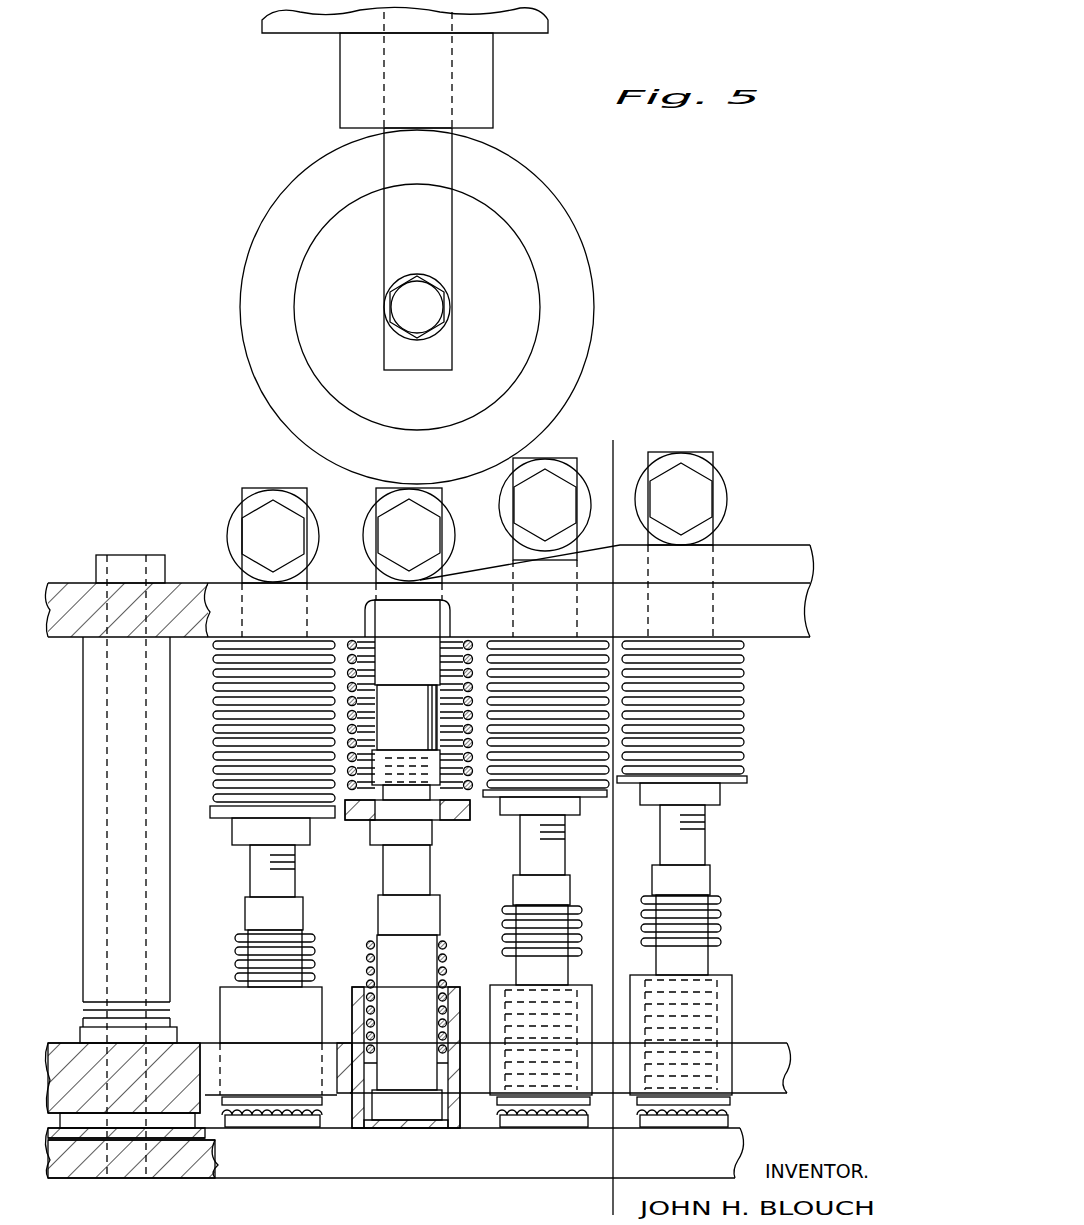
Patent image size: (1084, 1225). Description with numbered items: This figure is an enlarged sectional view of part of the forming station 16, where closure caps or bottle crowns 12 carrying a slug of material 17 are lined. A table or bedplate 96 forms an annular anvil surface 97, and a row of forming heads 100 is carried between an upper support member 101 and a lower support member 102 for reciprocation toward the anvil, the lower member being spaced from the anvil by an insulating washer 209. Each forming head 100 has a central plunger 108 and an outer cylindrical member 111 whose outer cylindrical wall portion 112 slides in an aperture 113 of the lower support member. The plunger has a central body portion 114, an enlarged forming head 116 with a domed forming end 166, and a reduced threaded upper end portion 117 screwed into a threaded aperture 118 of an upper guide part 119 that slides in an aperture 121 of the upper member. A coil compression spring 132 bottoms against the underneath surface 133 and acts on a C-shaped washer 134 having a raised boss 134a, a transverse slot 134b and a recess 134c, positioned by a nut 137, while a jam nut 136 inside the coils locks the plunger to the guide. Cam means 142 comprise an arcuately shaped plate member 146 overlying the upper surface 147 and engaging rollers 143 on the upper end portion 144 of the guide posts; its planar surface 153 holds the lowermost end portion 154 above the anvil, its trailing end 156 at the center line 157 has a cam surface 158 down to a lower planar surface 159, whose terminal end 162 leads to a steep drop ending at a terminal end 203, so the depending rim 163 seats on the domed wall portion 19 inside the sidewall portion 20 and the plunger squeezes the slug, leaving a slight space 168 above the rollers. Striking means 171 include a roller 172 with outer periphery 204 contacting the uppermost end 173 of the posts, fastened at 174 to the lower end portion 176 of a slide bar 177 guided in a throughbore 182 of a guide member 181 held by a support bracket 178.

The closure cap or bottle crown 12 is at (265, 1130).
The forming station 16 is at (772, 775).
The slug of material 17 is at (540, 1125).
The central domed wall portion 19 is at (380, 1125).
The offset sidewall portion 20 is at (492, 1112).
The table or bedplate 96 is at (242, 1178).
The annular anvil surface 97 is at (745, 1125).
The forming head 100 is at (228, 865).
The upper support member 101 is at (795, 635).
The lower support member 102 is at (760, 1048).
The central plunger 108 is at (302, 930).
The outer cylindrical member 111 is at (240, 1000).
The outer cylindrical wall portion 112 is at (445, 998).
The aperture 113 is at (455, 1048).
The central body portion 114 is at (252, 912).
The enlarged forming head 116 is at (398, 1098).
The reduced threaded upper end portion 117 is at (260, 878).
The threaded aperture 118 is at (414, 695).
The upper guide part 119 is at (245, 577).
The aperture 121 is at (385, 622).
The coil compression spring 132 is at (240, 733).
The underneath surface 133 is at (196, 637).
The C-shaped washer 134 is at (318, 815).
The raised boss 134a is at (470, 812).
The transverse slot 134b is at (215, 812).
The recess 134c is at (410, 915).
The jam nut 136 is at (408, 752).
The nut 137 is at (315, 830).
The cam means 142 is at (806, 538).
The roller 143 is at (229, 518).
The upper end portion 144 is at (248, 488).
The arcuately shaped plate member 146 is at (768, 562).
The upper surface 147 is at (746, 583).
The planar surface 153 is at (772, 540).
The lowermost end portion 154 is at (740, 1105).
The trailing end 156 is at (548, 572).
The center line 157 is at (622, 870).
The cam surface 158 is at (602, 500).
The lower planar surface 159 is at (478, 560).
The terminal end 162 is at (440, 578).
The depending rim 163 is at (357, 1108).
The forming end 166 is at (452, 1120).
The space 168 is at (265, 585).
The wheel assembly 171 is at (598, 238).
The roller 172 is at (578, 332).
The uppermost end 173 is at (270, 488).
The fastening 174 is at (403, 307).
The lower end portion 176 is at (448, 347).
The slide bar 177 is at (398, 163).
The support bracket 178 is at (520, 30).
The guide member 181 is at (340, 60).
The throughbore 182 is at (388, 85).
The terminal end 203 is at (448, 590).
The outer periphery 204 is at (572, 387).
The insulating washer 209 is at (168, 1130).